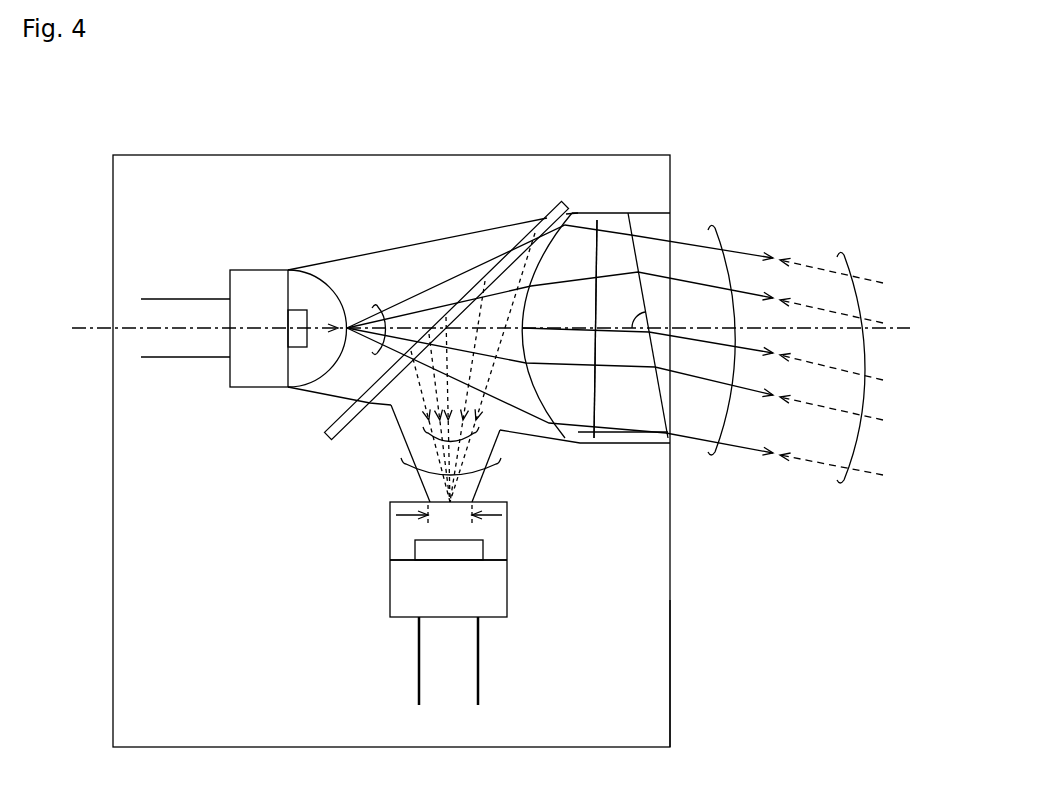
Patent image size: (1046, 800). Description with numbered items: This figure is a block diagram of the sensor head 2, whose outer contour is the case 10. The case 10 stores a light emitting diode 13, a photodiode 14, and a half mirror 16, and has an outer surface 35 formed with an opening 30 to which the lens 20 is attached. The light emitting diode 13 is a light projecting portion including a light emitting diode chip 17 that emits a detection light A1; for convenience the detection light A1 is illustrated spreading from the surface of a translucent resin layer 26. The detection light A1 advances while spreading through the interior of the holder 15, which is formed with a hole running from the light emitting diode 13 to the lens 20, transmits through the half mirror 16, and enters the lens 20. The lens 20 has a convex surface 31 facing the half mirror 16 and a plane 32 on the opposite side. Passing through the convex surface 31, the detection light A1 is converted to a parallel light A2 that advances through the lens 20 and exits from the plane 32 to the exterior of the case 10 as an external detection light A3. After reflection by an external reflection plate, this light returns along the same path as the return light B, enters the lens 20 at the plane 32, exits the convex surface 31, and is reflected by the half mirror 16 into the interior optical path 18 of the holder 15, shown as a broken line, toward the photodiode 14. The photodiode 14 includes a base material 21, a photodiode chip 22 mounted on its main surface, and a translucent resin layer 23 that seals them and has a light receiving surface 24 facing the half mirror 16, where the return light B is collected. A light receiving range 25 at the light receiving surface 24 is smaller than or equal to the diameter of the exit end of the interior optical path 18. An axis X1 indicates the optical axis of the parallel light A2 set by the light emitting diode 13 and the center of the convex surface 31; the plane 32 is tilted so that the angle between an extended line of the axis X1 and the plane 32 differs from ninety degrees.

The sensor head 2 is at (671, 128).
The case 10 is at (459, 155).
The light emitting diode 13 is at (251, 250).
The photodiode 14 is at (522, 572).
The holder 15 is at (436, 240).
The half mirror 16 is at (547, 213).
The light emitting diode chip 17 is at (297, 310).
The interior optical path 18 is at (554, 548).
The lens 20 is at (585, 213).
The base material 21 is at (492, 593).
The photodiode chip 22 is at (448, 548).
The translucent resin layer 23 is at (402, 547).
The light receiving surface 24 is at (415, 498).
The light receiving range 25 is at (448, 517).
The translucent resin layer 26 is at (340, 296).
The opening 30 is at (670, 222).
The convex surface 31 is at (545, 430).
The plane 32 is at (663, 354).
The outer surface 35 is at (670, 696).
The detection light A1 is at (377, 305).
The parallel light A2 is at (597, 222).
The external detection light A3 is at (715, 455).
The return light B is at (844, 483).
The axis X1 is at (489, 309).